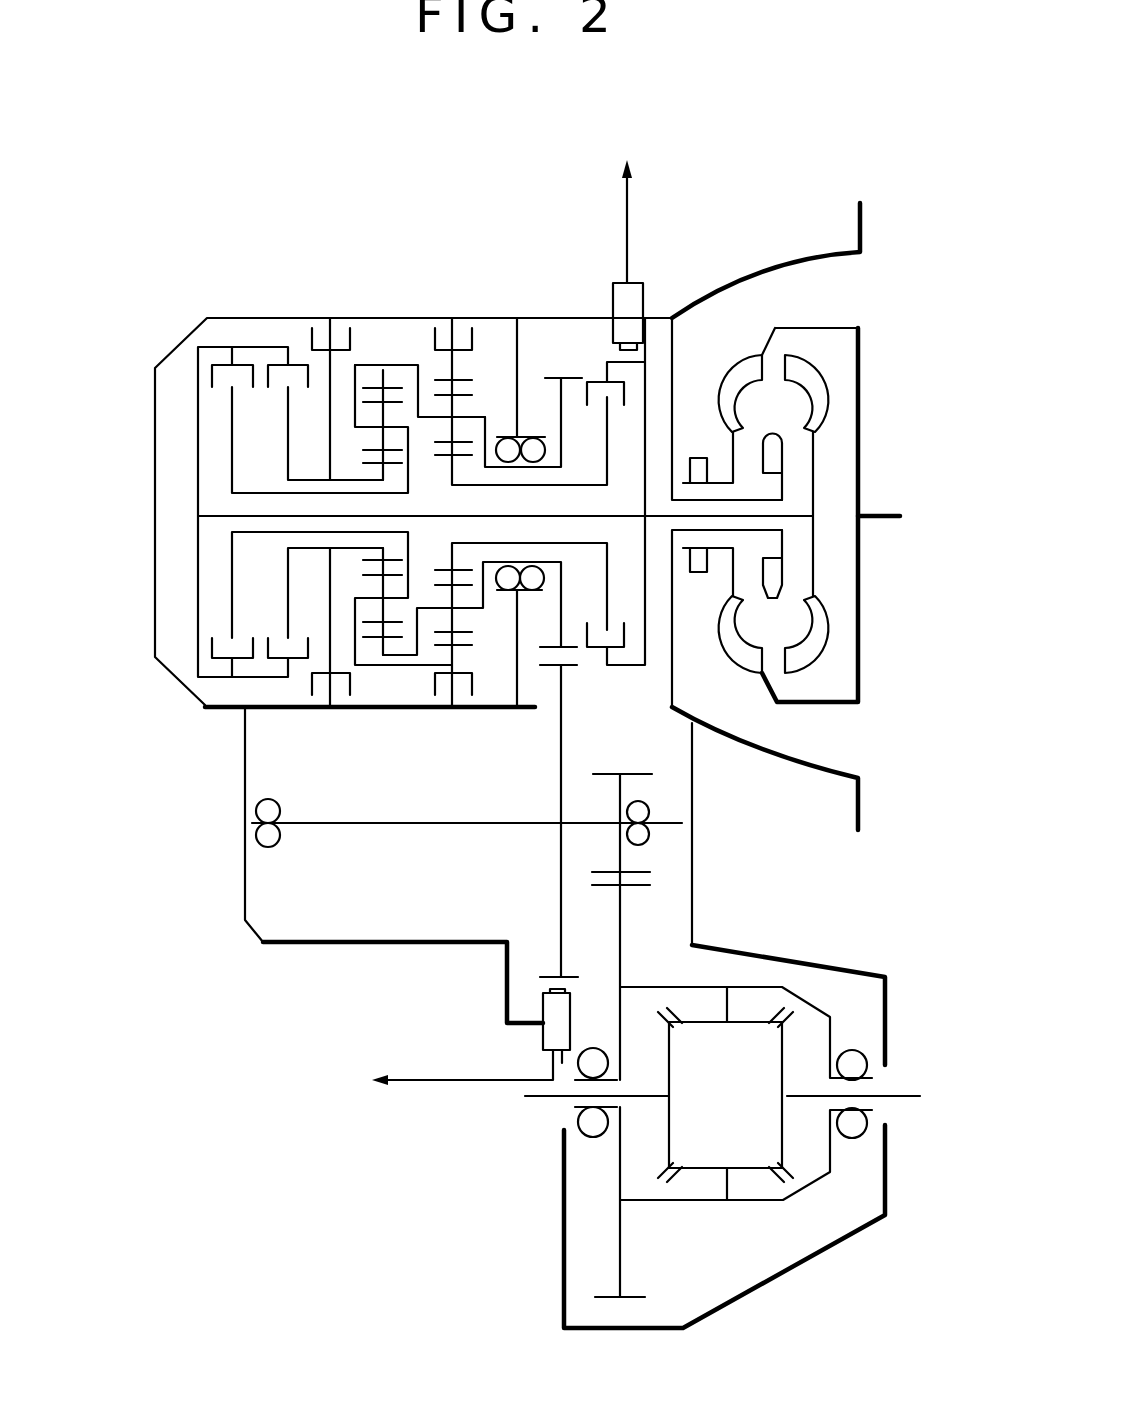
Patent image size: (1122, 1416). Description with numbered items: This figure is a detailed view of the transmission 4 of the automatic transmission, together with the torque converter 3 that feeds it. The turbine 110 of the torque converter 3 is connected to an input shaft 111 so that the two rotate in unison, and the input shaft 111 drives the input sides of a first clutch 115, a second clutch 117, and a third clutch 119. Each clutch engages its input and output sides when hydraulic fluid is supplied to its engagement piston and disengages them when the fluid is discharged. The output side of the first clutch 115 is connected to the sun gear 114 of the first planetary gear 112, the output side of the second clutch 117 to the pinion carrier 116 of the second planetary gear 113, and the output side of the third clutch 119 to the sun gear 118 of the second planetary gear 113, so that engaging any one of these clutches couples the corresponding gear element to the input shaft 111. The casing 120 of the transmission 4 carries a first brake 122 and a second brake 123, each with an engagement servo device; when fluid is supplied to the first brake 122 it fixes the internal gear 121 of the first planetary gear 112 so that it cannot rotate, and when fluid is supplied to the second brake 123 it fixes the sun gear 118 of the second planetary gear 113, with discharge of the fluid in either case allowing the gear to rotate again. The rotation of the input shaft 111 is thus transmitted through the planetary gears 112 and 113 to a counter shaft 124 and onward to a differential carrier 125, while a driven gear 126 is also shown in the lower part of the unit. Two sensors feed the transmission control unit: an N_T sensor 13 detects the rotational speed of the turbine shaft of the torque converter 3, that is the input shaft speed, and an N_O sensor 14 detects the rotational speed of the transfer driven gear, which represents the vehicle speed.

The torque converter 3 is at (775, 236).
The transmission 4 is at (298, 217).
The N_T sensor 13 is at (645, 297).
The N_O sensor 14 is at (543, 1037).
The turbine 110 is at (810, 397).
The input shaft 111 is at (792, 518).
The first planetary gear 112 is at (482, 358).
The second planetary gear 113 is at (380, 334).
The sun gear 114 is at (462, 447).
The first clutch 115 is at (592, 363).
The pinion carrier 116 is at (404, 412).
The second clutch 117 is at (222, 362).
The sun gear 118 is at (367, 465).
The third clutch 119 is at (278, 362).
The casing 120 is at (155, 432).
The internal gear 121 is at (437, 380).
The first brake 122 is at (460, 347).
The second brake 123 is at (322, 340).
The counter shaft 124 is at (323, 823).
The differential carrier 125 is at (753, 985).
The driven gear 126 is at (558, 912).